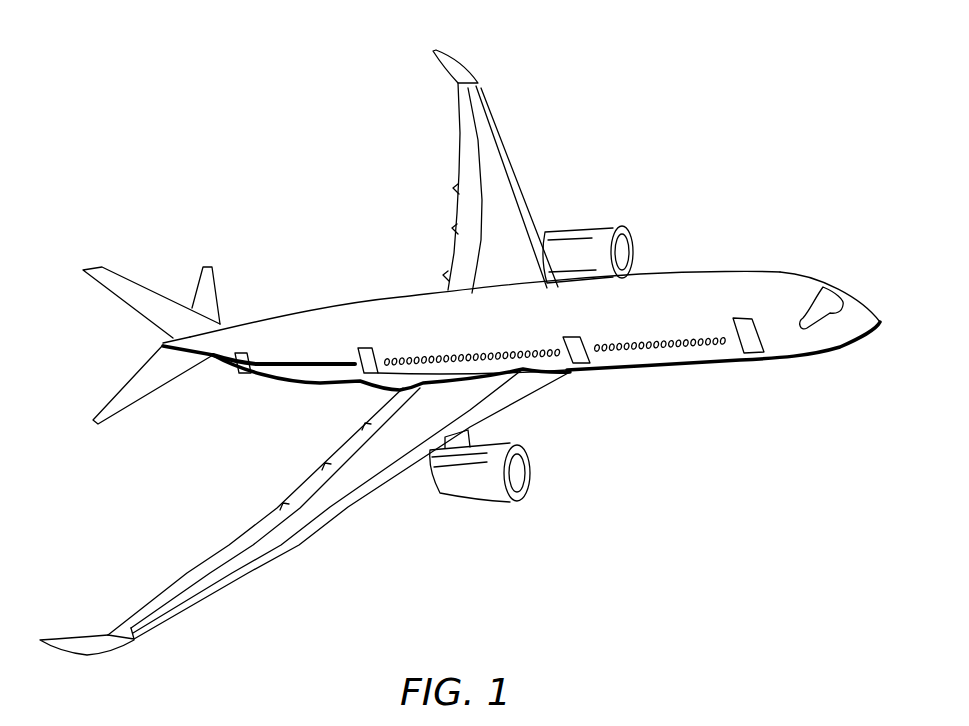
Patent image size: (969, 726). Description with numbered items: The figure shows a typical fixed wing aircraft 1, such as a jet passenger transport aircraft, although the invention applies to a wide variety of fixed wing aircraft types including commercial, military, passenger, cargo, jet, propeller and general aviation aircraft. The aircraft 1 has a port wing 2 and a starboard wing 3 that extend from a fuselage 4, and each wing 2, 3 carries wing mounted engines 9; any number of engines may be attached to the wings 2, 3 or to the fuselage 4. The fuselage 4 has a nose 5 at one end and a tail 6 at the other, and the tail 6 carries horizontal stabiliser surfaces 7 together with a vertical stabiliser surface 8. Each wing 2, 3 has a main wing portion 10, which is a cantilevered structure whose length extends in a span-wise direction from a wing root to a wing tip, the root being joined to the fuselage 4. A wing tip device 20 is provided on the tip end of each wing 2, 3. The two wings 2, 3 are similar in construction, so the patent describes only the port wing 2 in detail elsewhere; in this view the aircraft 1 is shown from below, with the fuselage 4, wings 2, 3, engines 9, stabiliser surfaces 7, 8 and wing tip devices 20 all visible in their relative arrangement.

The fixed wing aircraft 1 is at (712, 125).
The port wing 2 is at (498, 175).
The starboard wing 3 is at (330, 495).
The fuselage 4 is at (396, 327).
The nose 5 is at (878, 320).
The tail 6 is at (162, 344).
The horizontal stabiliser surfaces 7 is at (212, 290).
The vertical stabiliser surface 8 is at (117, 283).
The wing mounted engines 9 is at (624, 248).
The main wing portion 10 is at (370, 465).
The wing tip device 20 is at (462, 67).